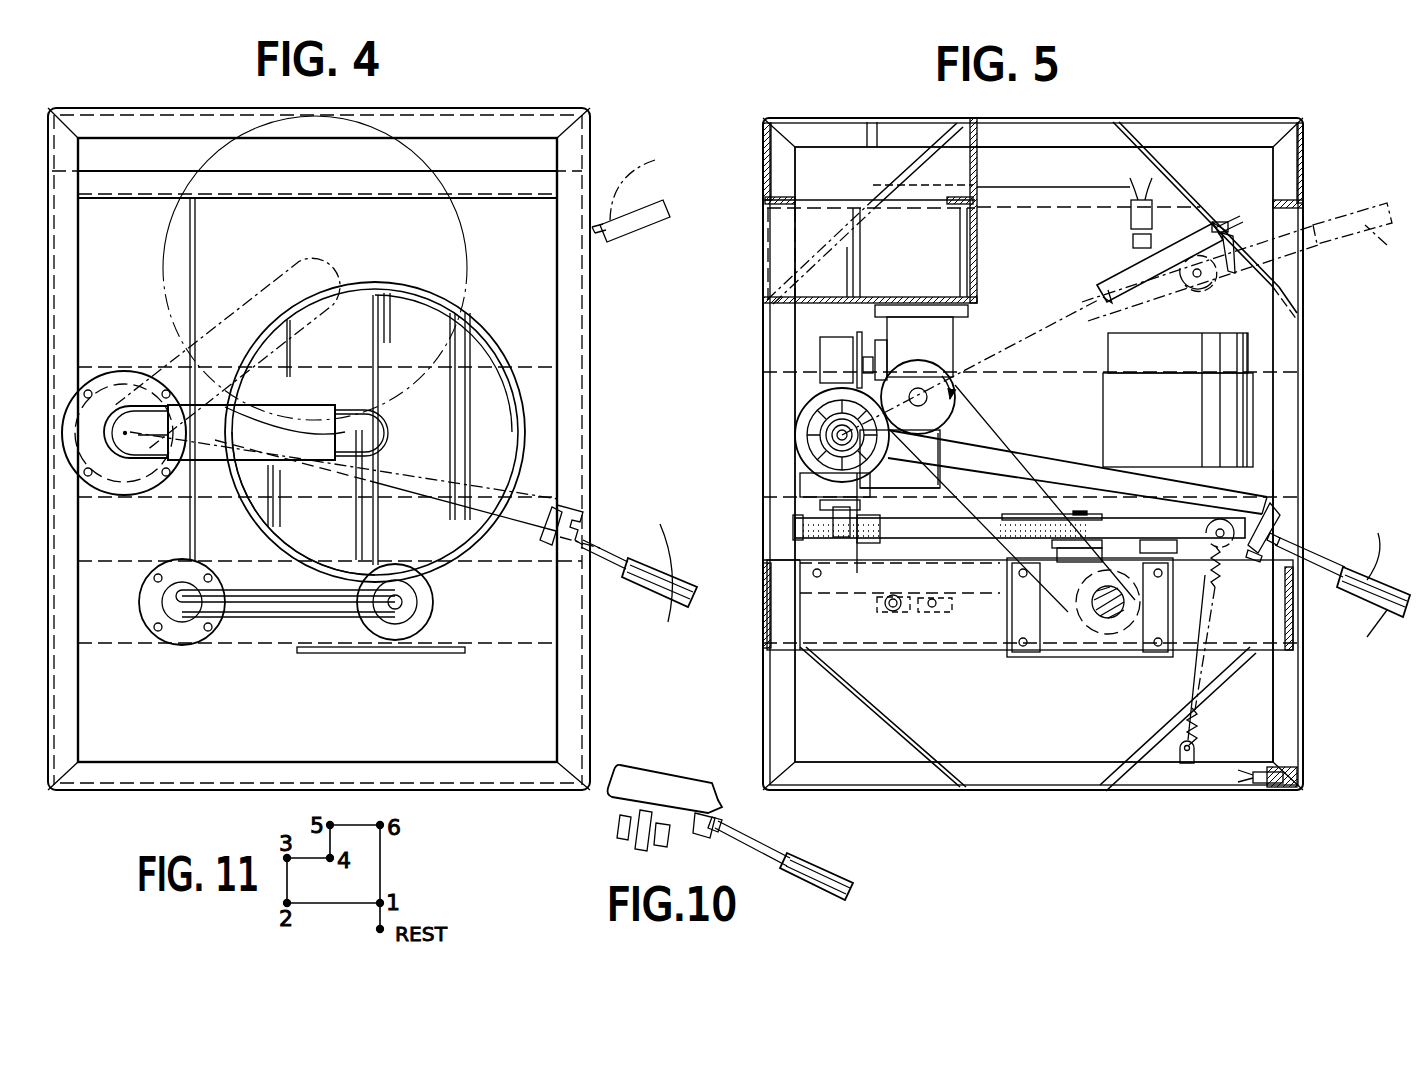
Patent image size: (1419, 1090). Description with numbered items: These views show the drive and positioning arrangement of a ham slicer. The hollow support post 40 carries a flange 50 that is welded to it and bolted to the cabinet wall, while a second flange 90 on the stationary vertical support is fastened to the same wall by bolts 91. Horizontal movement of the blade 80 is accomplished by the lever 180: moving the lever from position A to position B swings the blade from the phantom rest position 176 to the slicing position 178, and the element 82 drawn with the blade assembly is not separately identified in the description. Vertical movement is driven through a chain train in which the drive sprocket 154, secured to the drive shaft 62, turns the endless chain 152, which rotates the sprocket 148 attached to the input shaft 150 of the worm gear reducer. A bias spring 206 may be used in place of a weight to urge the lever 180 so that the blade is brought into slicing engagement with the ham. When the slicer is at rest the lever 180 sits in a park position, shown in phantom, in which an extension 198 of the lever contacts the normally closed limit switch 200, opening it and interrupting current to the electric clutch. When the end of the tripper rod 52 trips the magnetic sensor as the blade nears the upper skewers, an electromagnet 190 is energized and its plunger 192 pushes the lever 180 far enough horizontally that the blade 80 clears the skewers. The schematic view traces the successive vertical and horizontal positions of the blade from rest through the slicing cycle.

In FIG. 4, the support post 40 is at (290, 613).
In FIG. 4, the flange 50 is at (185, 632).
In FIG. 4, the tripper rod 52 is at (347, 603).
In FIG. 5, the drive shaft 62 is at (1100, 617).
In FIG. 4, the blade 80 is at (497, 422).
In FIG. 4, the tube arm 82 is at (240, 303).
In FIG. 4, the flange 90 is at (135, 377).
In FIG. 4, the bolts 91 is at (183, 430).
In FIG. 5, the sprocket 148 is at (918, 383).
In FIG. 5, the input shaft 150 is at (928, 400).
In FIG. 5, the endless chain 152 is at (1030, 470).
In FIG. 5, the drive sprocket 154 is at (1125, 628).
In FIG. 4, the rest position 176 is at (398, 152).
In FIG. 4, the slicing position 178 is at (480, 327).
In FIG. 4, the lever 180 is at (637, 225).
In FIG. 5, the lever 180 is at (1113, 295).
In FIG. 10, the lever 180 is at (656, 782).
In FIG. 10, the electromagnet 190 is at (617, 827).
In FIG. 10, the plunger 192 is at (637, 845).
In FIG. 5, the extension 198 is at (1132, 247).
In FIG. 5, the limit switch 200 is at (1130, 218).
In FIG. 5, the bias spring 206 is at (1197, 725).